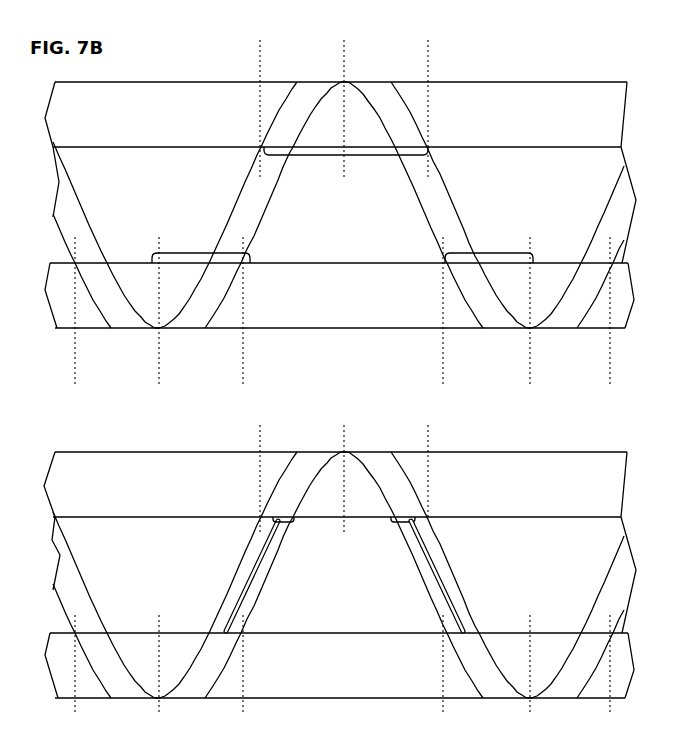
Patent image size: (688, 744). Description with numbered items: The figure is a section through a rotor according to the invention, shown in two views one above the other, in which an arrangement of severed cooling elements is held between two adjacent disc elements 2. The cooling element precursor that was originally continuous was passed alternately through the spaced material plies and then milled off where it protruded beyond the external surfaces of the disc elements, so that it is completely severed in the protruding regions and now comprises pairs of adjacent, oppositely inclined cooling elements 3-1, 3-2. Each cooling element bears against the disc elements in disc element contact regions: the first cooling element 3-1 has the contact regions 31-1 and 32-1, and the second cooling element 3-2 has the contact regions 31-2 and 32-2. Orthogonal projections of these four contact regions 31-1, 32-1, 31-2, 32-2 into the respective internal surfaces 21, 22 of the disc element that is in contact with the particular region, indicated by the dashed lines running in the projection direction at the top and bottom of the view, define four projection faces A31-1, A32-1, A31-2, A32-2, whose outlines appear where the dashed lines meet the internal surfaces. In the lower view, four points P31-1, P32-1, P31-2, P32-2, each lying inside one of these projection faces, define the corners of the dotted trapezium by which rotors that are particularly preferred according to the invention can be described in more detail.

The disc element 2 is at (518, 123).
The internal surface of disc element 21 is at (320, 262).
The internal surface of disc element 22 is at (456, 148).
The cooling element 3-1 is at (262, 208).
The cooling element 3-2 is at (428, 208).
The disc element contact region 31-1 is at (213, 297).
The disc element contact region 31-2 is at (480, 297).
The disc element contact region 32-1 is at (303, 97).
The disc element contact region 32-2 is at (380, 90).
The projection face A31-1 is at (203, 252).
The projection face A31-2 is at (487, 252).
The projection face A32-1 is at (302, 157).
The projection face A32-2 is at (387, 157).
The point P31-1 is at (223, 630).
The point P31-2 is at (470, 633).
The point P32-1 is at (276, 521).
The point P32-2 is at (413, 521).